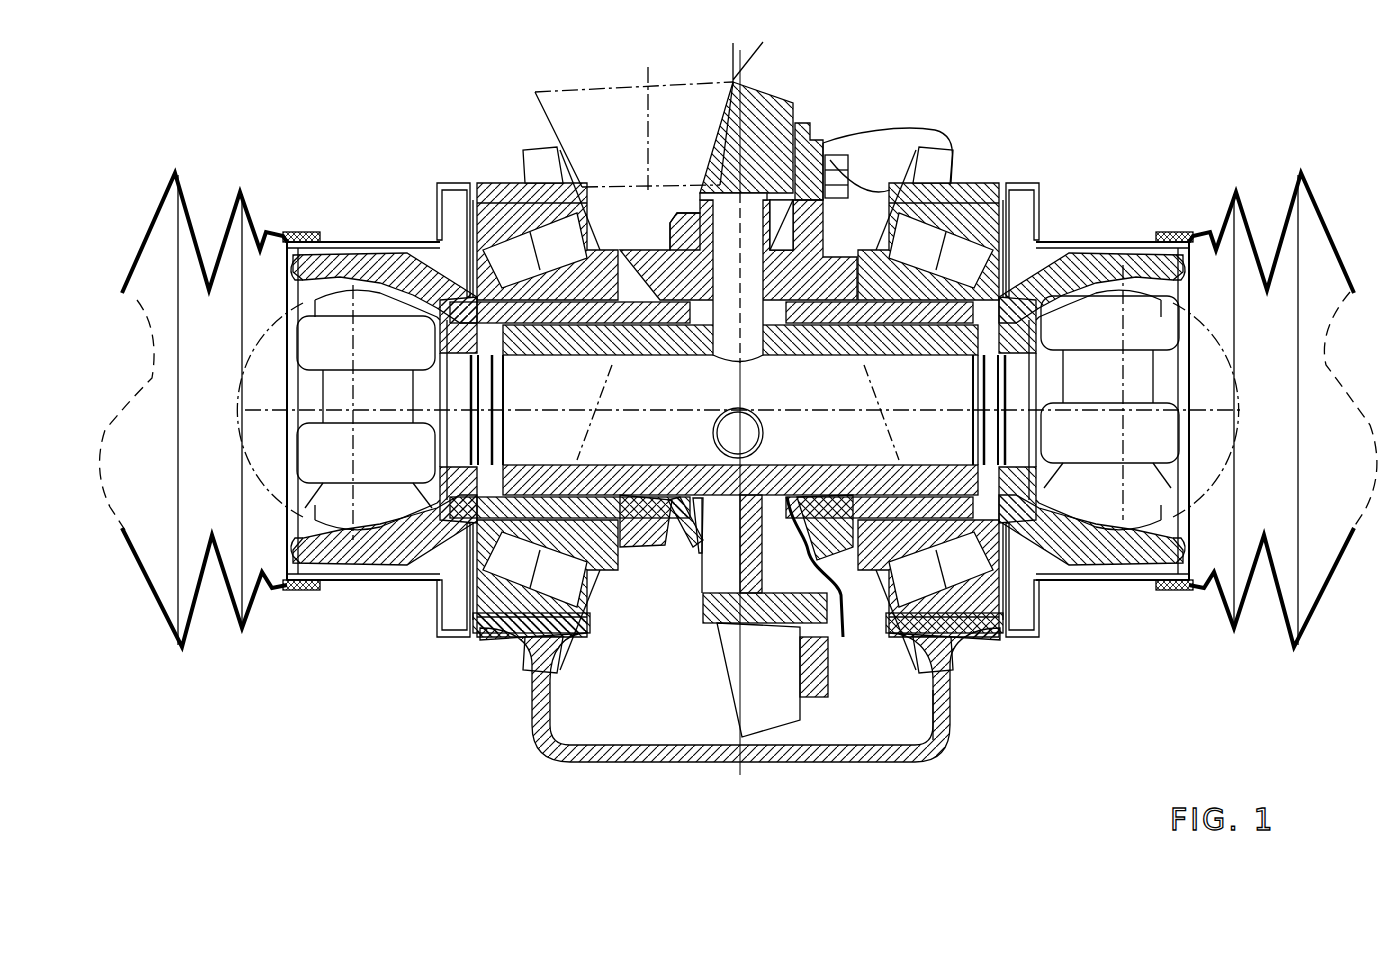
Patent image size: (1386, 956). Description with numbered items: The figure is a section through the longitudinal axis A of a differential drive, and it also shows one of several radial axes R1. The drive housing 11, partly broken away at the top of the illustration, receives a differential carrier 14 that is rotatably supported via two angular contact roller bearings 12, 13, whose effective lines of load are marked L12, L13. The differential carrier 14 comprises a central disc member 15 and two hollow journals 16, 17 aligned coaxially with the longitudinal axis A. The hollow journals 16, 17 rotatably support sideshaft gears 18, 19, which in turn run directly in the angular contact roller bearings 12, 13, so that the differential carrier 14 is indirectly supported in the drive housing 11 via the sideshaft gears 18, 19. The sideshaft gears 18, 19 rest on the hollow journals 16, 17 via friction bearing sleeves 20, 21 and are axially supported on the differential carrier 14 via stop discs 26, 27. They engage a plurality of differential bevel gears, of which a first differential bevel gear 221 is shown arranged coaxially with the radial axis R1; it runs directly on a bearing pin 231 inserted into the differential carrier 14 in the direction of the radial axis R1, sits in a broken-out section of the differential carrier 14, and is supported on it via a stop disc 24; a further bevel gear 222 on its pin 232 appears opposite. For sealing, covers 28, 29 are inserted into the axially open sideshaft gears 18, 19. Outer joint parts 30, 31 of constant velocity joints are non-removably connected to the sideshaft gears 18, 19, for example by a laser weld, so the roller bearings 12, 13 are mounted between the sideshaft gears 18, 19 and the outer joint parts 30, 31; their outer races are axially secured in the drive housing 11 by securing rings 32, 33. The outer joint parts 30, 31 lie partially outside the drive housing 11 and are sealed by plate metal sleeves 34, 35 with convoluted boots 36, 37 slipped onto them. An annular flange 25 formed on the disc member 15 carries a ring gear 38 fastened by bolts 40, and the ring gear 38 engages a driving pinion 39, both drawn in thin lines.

The drive housing 11 is at (945, 130).
The angular contact roller bearing 12 is at (520, 180).
The angular contact roller bearing 13 is at (955, 210).
The differential carrier 14 is at (702, 660).
The central disc member 15 is at (700, 560).
The hollow journal 16 is at (500, 625).
The hollow journal 17 is at (1012, 620).
The sideshaft gear 18 is at (633, 587).
The sideshaft gear 19 is at (880, 612).
The friction bearing sleeve 20 is at (462, 615).
The friction bearing sleeve 21 is at (955, 612).
The first differential bevel gear 221 is at (848, 165).
The lower ring 222 is at (680, 535).
The bearing pin 231 is at (783, 170).
The lower thrust ring 232 is at (710, 555).
The stop disc 24 is at (812, 160).
The annular flange 25 is at (822, 695).
The stop disc 26 is at (432, 565).
The stop disc 27 is at (1067, 570).
The cover 28 is at (385, 562).
The cover 29 is at (1115, 565).
The outer joint part 30 is at (342, 565).
The outer joint part 31 is at (1162, 588).
The securing ring 32 is at (447, 183).
The securing ring 33 is at (1022, 185).
The plate metal sleeve 34 is at (400, 240).
The plate metal sleeve 35 is at (1090, 242).
The convoluted boot 36 is at (180, 178).
The convoluted boot 37 is at (1300, 178).
The ring gear 38 is at (778, 100).
The driving pinion 39 is at (565, 98).
The bolt 40 is at (850, 185).
The longitudinal axis A is at (1225, 410).
The effective line of load L12 is at (598, 374).
The effective line of load L13 is at (878, 374).
The radial axis R1 is at (761, 53).